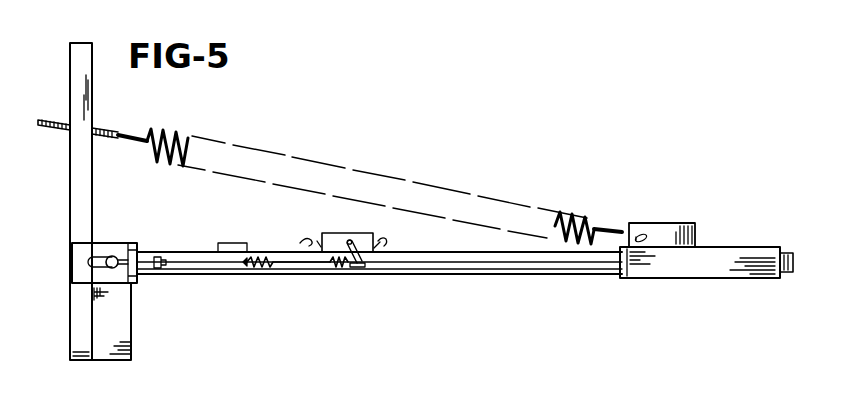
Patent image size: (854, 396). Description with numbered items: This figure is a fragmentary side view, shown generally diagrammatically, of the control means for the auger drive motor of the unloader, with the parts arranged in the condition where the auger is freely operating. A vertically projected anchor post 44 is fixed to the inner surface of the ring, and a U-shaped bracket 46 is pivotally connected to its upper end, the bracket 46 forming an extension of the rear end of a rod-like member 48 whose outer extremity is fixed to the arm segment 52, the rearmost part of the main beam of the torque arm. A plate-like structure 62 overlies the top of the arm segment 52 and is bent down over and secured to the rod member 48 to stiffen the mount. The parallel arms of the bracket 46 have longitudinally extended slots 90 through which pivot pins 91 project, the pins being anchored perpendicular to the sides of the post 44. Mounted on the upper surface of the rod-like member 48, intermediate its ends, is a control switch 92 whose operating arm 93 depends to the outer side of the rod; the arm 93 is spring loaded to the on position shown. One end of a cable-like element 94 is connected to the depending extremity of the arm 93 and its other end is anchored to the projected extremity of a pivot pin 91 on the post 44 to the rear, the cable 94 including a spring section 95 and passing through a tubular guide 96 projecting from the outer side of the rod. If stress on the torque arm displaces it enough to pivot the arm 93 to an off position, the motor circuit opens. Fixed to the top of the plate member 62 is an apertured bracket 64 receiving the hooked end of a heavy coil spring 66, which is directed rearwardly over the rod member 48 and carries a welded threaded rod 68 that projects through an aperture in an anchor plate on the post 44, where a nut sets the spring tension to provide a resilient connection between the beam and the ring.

The anchor post 44 is at (125, 318).
The bracket 46 is at (106, 242).
The rod-like member 48 is at (482, 270).
The arm segment 52 is at (790, 268).
The plate-like structure 62 is at (710, 270).
The bracket 64 is at (668, 224).
The coil spring 66 is at (382, 171).
The threaded rod 68 is at (44, 118).
The slot 90 is at (95, 262).
The pivot pin 91 is at (126, 249).
The control switch 92 is at (338, 238).
The operating arm 93 is at (365, 266).
The cable-like element 94 is at (220, 268).
The spring section 95 is at (270, 268).
The tubular guide 96 is at (163, 258).